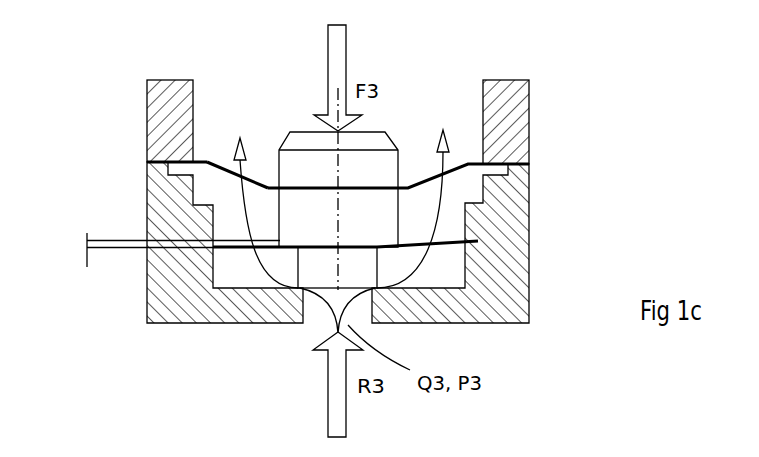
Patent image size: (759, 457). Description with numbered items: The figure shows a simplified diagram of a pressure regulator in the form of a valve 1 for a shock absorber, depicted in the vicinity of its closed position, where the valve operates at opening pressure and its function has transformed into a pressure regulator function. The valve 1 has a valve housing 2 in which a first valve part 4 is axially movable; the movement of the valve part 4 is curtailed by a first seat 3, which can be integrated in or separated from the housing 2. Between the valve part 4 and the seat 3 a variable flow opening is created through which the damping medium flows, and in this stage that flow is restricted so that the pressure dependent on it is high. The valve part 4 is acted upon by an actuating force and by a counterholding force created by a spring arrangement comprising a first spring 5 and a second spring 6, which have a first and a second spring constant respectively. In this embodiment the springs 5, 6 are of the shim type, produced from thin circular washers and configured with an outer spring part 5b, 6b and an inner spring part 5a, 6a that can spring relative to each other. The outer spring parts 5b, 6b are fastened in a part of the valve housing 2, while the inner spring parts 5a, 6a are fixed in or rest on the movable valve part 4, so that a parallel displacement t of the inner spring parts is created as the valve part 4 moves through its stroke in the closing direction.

The valve 1 is at (125, 68).
The valve housing 2 is at (528, 82).
The first seat 3 is at (377, 290).
The first valve part 4 is at (360, 215).
The first spring 5 is at (478, 162).
The inner spring part of first spring 5a is at (263, 188).
The outer spring part of first spring 5b is at (207, 164).
The second spring 6 is at (475, 243).
The inner spring part of second spring 6a is at (280, 244).
The outer spring part of second spring 6b is at (277, 246).
The parallel displacement t is at (98, 248).